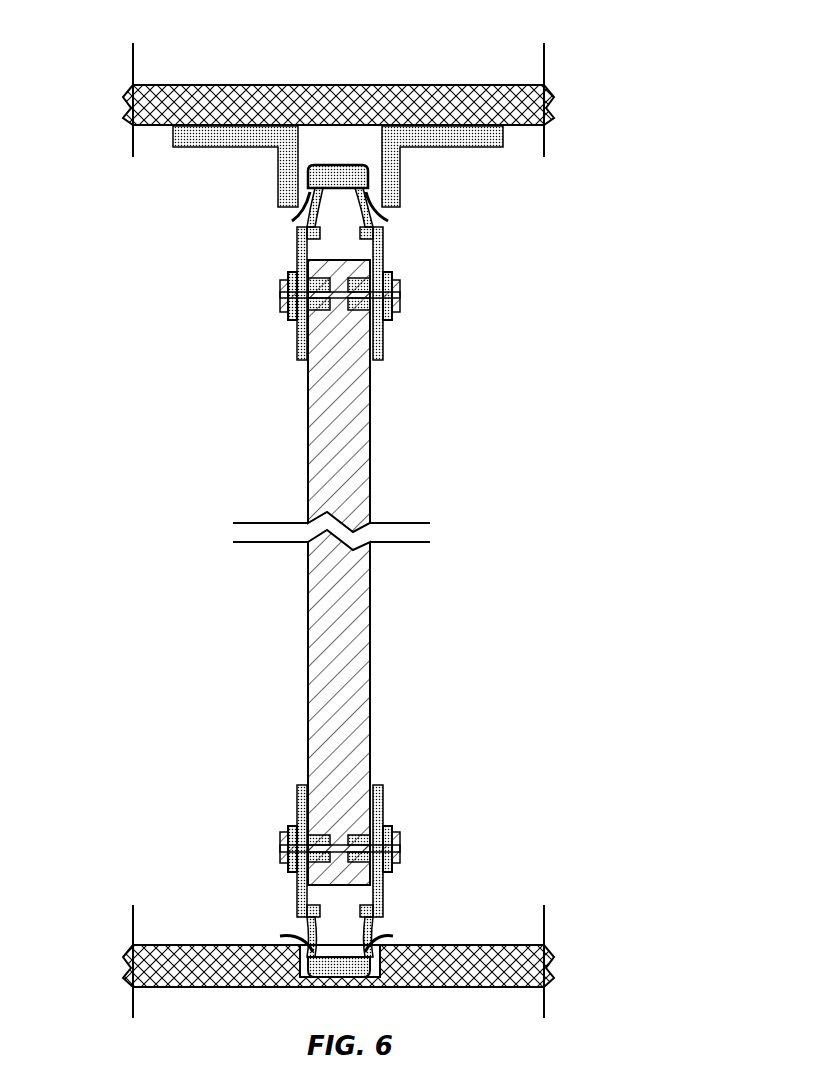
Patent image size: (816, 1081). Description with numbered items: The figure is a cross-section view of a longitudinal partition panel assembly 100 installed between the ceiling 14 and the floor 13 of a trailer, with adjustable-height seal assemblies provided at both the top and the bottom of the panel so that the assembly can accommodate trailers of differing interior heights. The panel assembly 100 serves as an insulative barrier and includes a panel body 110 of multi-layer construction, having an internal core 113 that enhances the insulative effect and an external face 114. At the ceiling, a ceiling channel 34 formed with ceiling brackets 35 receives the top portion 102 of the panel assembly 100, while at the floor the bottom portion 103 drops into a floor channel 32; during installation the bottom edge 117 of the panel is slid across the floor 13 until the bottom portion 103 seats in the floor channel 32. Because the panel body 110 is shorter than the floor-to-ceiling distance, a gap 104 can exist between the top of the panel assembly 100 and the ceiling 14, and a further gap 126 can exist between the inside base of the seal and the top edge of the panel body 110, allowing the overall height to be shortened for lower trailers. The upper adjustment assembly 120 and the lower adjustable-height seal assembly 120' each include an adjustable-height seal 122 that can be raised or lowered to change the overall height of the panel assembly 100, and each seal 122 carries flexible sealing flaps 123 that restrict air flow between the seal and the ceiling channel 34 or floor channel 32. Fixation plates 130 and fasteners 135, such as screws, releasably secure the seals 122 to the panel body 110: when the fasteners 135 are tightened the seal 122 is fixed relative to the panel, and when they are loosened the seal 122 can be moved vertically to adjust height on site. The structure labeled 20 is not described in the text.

The building structure 20 is at (100, 61).
The ceiling 14 is at (358, 103).
The floor 13 is at (246, 968).
The ceiling brackets 35 is at (437, 136).
The ceiling channel 34 is at (440, 190).
The longitudinal partition panel assembly 100 is at (108, 206).
The gap 104 is at (337, 142).
The top portion 102 is at (280, 222).
The bottom portion 103 is at (386, 767).
The flexible sealing flaps 123 is at (380, 208).
The adjustable-height seal 122 is at (290, 230).
The internal core 113 is at (333, 673).
The external face 114 is at (308, 746).
The panel body 110 is at (178, 616).
The adjustment assembly 120 is at (280, 572).
The adjustable-height seal assembly 120' is at (140, 845).
The fixation plates 130 is at (296, 320).
The fasteners 135 is at (386, 298).
The gap 126 is at (339, 250).
The bottom edge 117 is at (337, 979).
The floor channel 32 is at (389, 968).